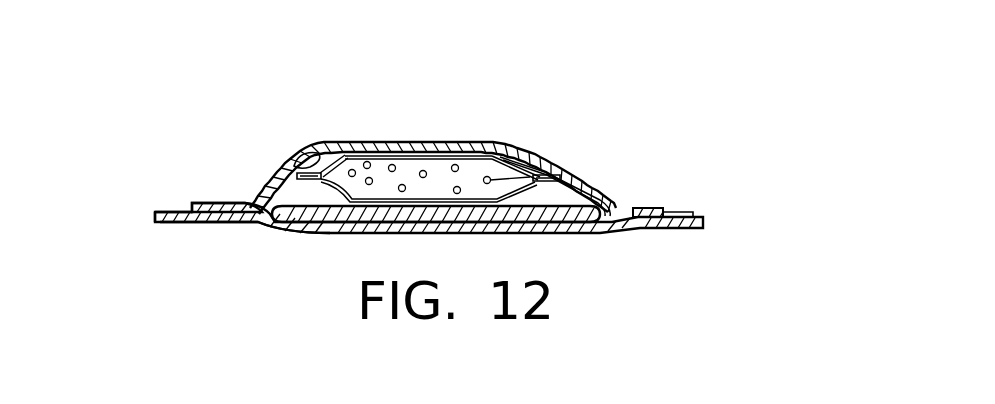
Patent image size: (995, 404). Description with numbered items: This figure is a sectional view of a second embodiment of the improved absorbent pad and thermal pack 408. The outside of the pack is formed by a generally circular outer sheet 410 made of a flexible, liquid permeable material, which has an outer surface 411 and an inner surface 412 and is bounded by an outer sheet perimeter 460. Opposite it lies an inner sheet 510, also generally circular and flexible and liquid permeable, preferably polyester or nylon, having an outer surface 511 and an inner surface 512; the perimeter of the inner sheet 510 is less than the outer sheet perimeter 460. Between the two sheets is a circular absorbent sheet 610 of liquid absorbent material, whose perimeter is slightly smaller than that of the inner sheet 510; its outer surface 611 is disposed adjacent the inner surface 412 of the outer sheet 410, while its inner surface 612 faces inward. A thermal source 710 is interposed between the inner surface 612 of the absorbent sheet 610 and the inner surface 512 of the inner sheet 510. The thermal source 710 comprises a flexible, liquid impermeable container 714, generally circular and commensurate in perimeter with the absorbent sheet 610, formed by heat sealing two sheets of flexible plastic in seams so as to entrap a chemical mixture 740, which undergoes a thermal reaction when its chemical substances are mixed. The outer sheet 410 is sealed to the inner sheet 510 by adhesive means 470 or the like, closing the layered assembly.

The absorbent pad and thermal pack 408 is at (672, 89).
The outer sheet 410 is at (620, 230).
The outer surface of outer sheet 411 is at (203, 225).
The inner surface of outer sheet 412 is at (155, 216).
The outer sheet perimeter 460 is at (690, 212).
The adhesive means 470 is at (214, 203).
The inner sheet 510 is at (495, 142).
The outer surface of inner sheet 511 is at (340, 142).
The inner surface of inner sheet 512 is at (290, 165).
The absorbent sheet 610 is at (655, 225).
The outer surface of absorbent sheet 611 is at (325, 225).
The inner surface of absorbent sheet 612 is at (606, 192).
The thermal source 710 is at (424, 147).
The flexible container 714 is at (387, 148).
The chemical mixture 740 is at (547, 176).